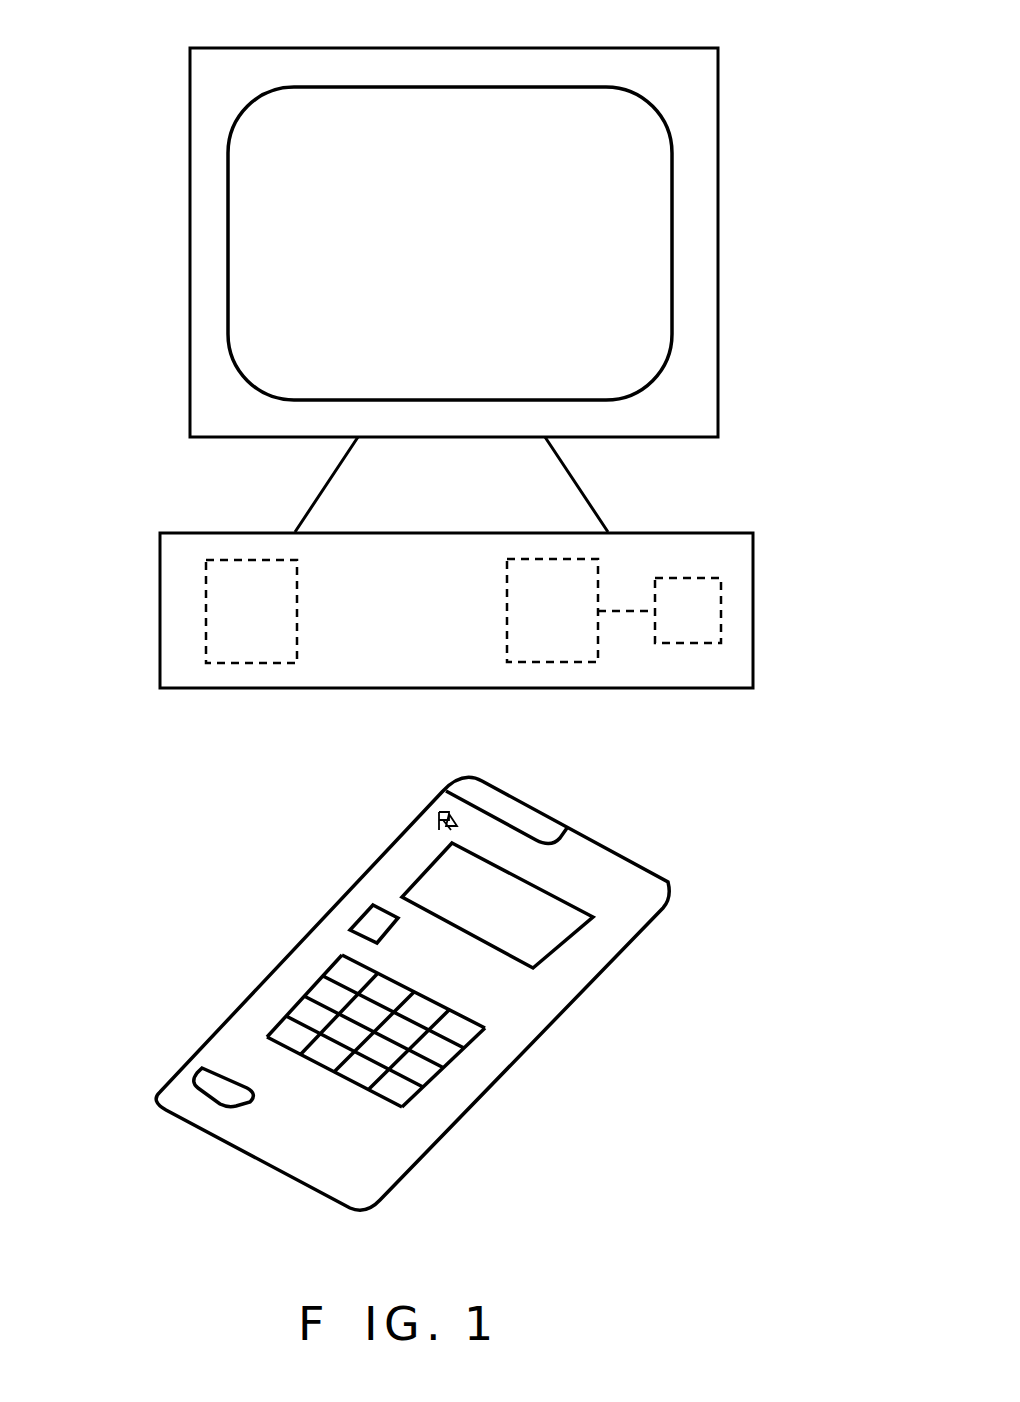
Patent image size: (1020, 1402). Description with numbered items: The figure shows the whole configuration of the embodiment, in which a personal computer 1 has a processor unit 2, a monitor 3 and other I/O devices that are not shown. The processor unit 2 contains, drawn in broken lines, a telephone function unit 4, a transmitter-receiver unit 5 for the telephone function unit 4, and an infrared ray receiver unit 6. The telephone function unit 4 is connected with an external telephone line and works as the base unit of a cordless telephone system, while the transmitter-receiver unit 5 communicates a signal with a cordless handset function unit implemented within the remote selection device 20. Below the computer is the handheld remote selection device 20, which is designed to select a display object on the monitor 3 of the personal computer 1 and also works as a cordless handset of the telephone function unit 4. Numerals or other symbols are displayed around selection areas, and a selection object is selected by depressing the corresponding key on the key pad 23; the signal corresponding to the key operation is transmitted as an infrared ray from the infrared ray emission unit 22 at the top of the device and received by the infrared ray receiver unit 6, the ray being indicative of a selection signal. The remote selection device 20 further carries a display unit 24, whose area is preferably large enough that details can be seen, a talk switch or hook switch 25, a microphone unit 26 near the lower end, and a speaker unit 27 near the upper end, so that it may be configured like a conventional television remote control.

The personal computer 1 is at (767, 447).
The processor unit 2 is at (753, 556).
The monitor 3 is at (718, 197).
The telephone function unit 4 is at (558, 635).
The transmitter-receiver unit 5 is at (702, 623).
The infrared ray receiver unit 6 is at (232, 618).
The remote selection device 20 is at (207, 950).
The infrared ray emission unit 22 is at (495, 803).
The key pad 23 is at (427, 1067).
The display unit 24 is at (542, 930).
The talk switch (hook switch) 25 is at (380, 918).
The microphone unit 26 is at (210, 1087).
The speaker unit 27 is at (438, 812).